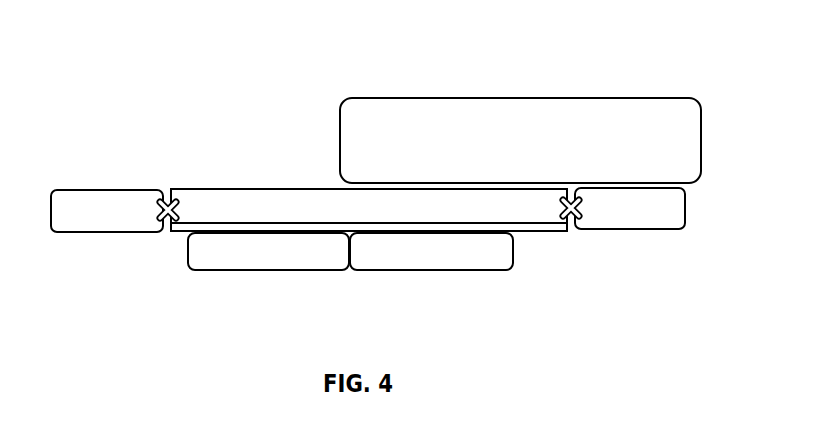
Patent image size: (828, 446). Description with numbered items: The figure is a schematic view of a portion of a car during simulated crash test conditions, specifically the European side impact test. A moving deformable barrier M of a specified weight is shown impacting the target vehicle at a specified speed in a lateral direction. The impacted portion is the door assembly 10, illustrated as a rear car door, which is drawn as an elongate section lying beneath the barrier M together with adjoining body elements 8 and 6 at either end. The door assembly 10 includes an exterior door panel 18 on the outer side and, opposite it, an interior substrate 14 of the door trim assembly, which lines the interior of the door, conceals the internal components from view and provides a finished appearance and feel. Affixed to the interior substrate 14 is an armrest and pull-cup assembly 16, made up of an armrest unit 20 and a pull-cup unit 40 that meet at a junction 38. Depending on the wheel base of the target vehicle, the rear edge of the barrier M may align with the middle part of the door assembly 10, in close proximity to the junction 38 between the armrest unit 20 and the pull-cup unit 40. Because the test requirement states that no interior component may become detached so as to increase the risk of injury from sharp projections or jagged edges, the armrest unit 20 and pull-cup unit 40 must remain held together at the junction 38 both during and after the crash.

The door assembly 10 is at (202, 169).
The end module 8 is at (88, 223).
The exterior door panel 18 is at (265, 188).
The interior substrate 14 is at (537, 231).
The end module 6 is at (643, 218).
The armrest and pull-cup assembly 16 is at (261, 346).
The armrest unit 20 is at (255, 252).
The pull-cup unit 40 is at (470, 252).
The junction 38 is at (350, 278).
The moving deformable barrier M is at (492, 112).